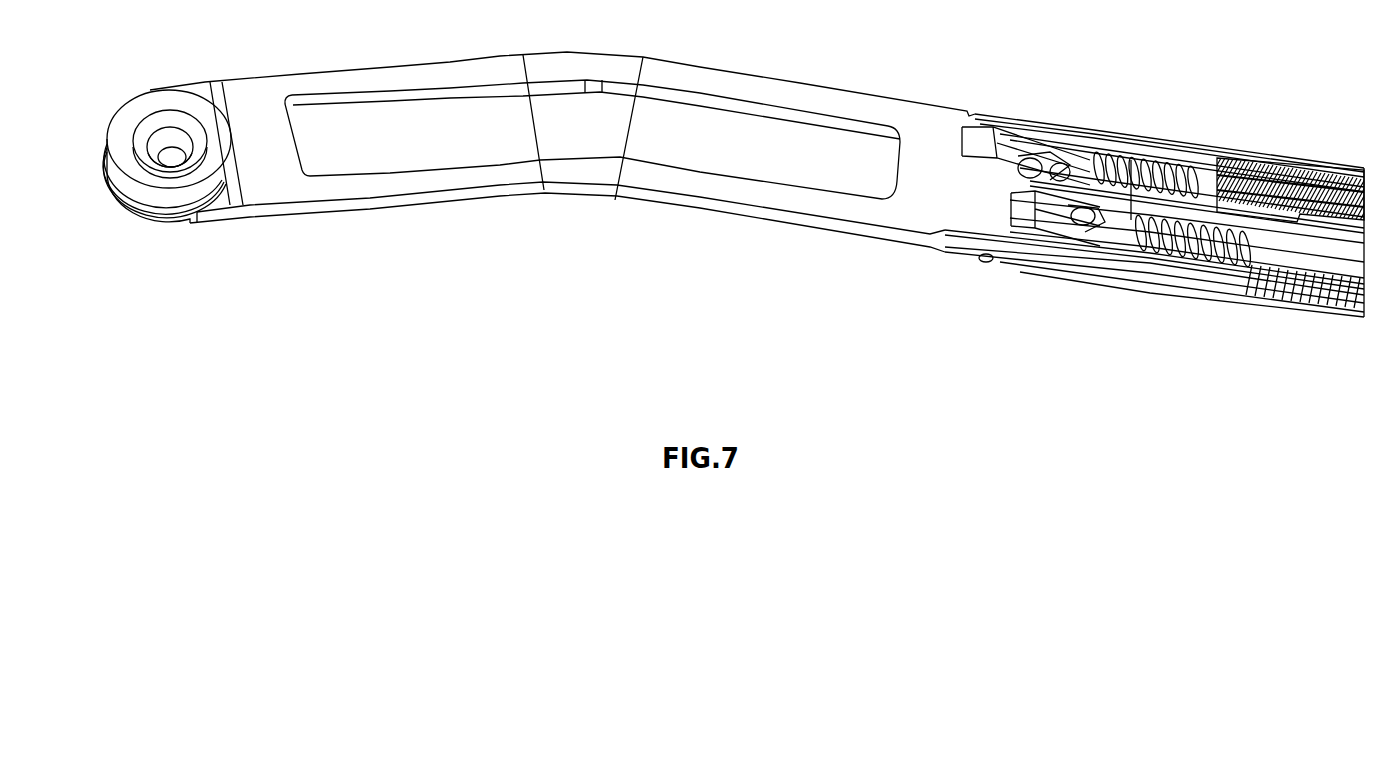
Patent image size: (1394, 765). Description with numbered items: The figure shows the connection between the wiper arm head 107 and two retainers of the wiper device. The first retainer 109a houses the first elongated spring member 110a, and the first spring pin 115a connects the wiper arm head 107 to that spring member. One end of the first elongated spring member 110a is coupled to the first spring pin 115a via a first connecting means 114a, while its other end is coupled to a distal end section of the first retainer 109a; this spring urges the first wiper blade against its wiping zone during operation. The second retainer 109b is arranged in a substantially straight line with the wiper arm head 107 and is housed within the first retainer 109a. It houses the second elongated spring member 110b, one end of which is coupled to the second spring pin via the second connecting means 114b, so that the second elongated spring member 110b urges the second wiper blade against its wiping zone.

The wiper arm head 107 is at (440, 200).
The first retainer 109a is at (1343, 305).
The second retainer 109b is at (1260, 270).
The first elongated spring member 110a is at (1153, 168).
The second elongated spring member 110b is at (1193, 243).
The first connecting means 114a is at (990, 157).
The second connecting means 114b is at (1025, 220).
The first spring pin 115a is at (1023, 150).